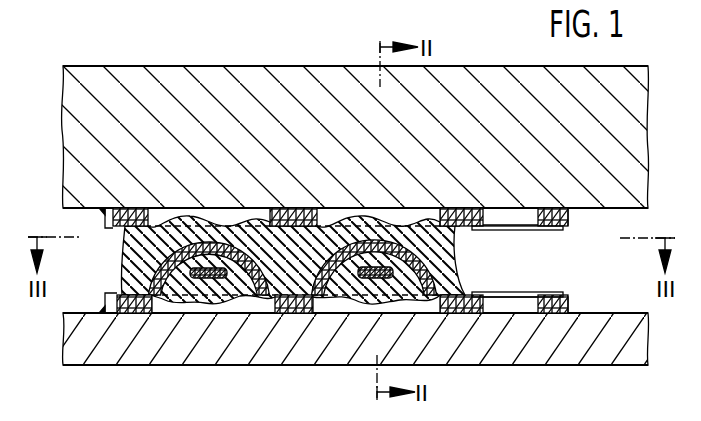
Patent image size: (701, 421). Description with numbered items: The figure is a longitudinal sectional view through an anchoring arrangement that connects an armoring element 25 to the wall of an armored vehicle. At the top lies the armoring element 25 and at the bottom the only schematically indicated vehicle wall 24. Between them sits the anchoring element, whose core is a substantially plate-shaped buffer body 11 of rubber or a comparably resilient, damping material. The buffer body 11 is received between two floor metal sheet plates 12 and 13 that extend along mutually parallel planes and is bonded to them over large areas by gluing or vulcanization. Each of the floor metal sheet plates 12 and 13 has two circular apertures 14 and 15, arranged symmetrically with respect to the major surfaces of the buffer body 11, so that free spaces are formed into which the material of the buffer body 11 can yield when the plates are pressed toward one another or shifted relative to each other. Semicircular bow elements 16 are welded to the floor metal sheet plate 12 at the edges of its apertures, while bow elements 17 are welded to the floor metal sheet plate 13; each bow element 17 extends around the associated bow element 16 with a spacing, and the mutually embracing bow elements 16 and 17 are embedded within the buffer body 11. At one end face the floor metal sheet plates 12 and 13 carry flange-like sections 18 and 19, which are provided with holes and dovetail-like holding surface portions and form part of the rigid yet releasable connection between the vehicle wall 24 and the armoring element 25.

The buffer body 11 is at (468, 266).
The floor metal sheet plate 12 is at (582, 303).
The floor metal sheet plate 13 is at (580, 222).
The circular aperture 14 is at (157, 300).
The circular aperture 15 is at (150, 215).
The bow element 16 is at (258, 297).
The bow element 17 is at (146, 295).
The flange-like section 18 is at (555, 295).
The flange-like section 19 is at (550, 230).
The vehicle wall 24 is at (86, 370).
The armoring element 25 is at (497, 63).